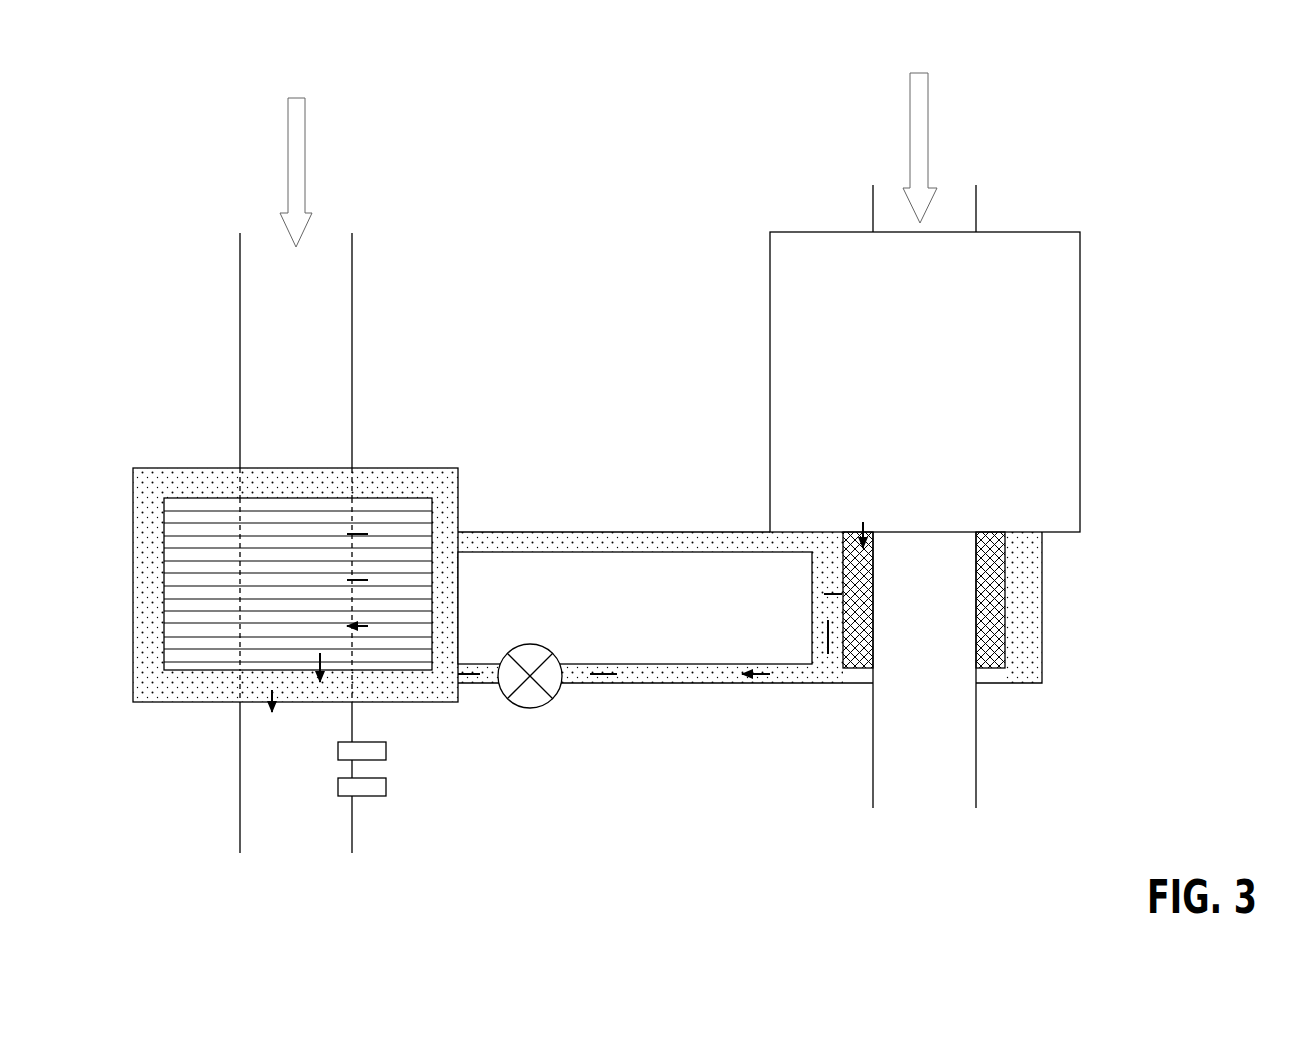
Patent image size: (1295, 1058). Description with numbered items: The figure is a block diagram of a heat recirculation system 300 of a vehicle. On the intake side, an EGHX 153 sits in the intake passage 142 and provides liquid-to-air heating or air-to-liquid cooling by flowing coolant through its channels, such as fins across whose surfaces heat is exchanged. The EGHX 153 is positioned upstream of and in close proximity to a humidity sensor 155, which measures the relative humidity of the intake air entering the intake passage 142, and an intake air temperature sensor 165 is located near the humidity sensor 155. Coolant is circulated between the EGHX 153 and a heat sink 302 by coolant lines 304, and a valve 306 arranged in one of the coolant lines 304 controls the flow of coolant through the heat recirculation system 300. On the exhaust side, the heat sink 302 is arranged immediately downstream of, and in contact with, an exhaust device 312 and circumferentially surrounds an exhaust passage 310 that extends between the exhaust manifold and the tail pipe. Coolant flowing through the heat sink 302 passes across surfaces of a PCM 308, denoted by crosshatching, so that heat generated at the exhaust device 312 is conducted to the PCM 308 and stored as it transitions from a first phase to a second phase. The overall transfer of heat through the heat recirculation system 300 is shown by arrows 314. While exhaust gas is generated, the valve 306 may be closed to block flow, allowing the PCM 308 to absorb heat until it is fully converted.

The heat recirculation system 300 is at (1190, 80).
The intake passage 142 is at (303, 821).
The EGHX 153 is at (146, 456).
The humidity sensor 155 is at (386, 750).
The intake air temperature sensor 165 is at (386, 792).
The heat sink 302 is at (1044, 706).
The coolant lines 304 is at (545, 532).
The valve 306 is at (527, 708).
The PCM 308 is at (1003, 620).
The exhaust passage 310 is at (943, 671).
The exhaust device 312 is at (943, 394).
The arrows 314 is at (348, 534).